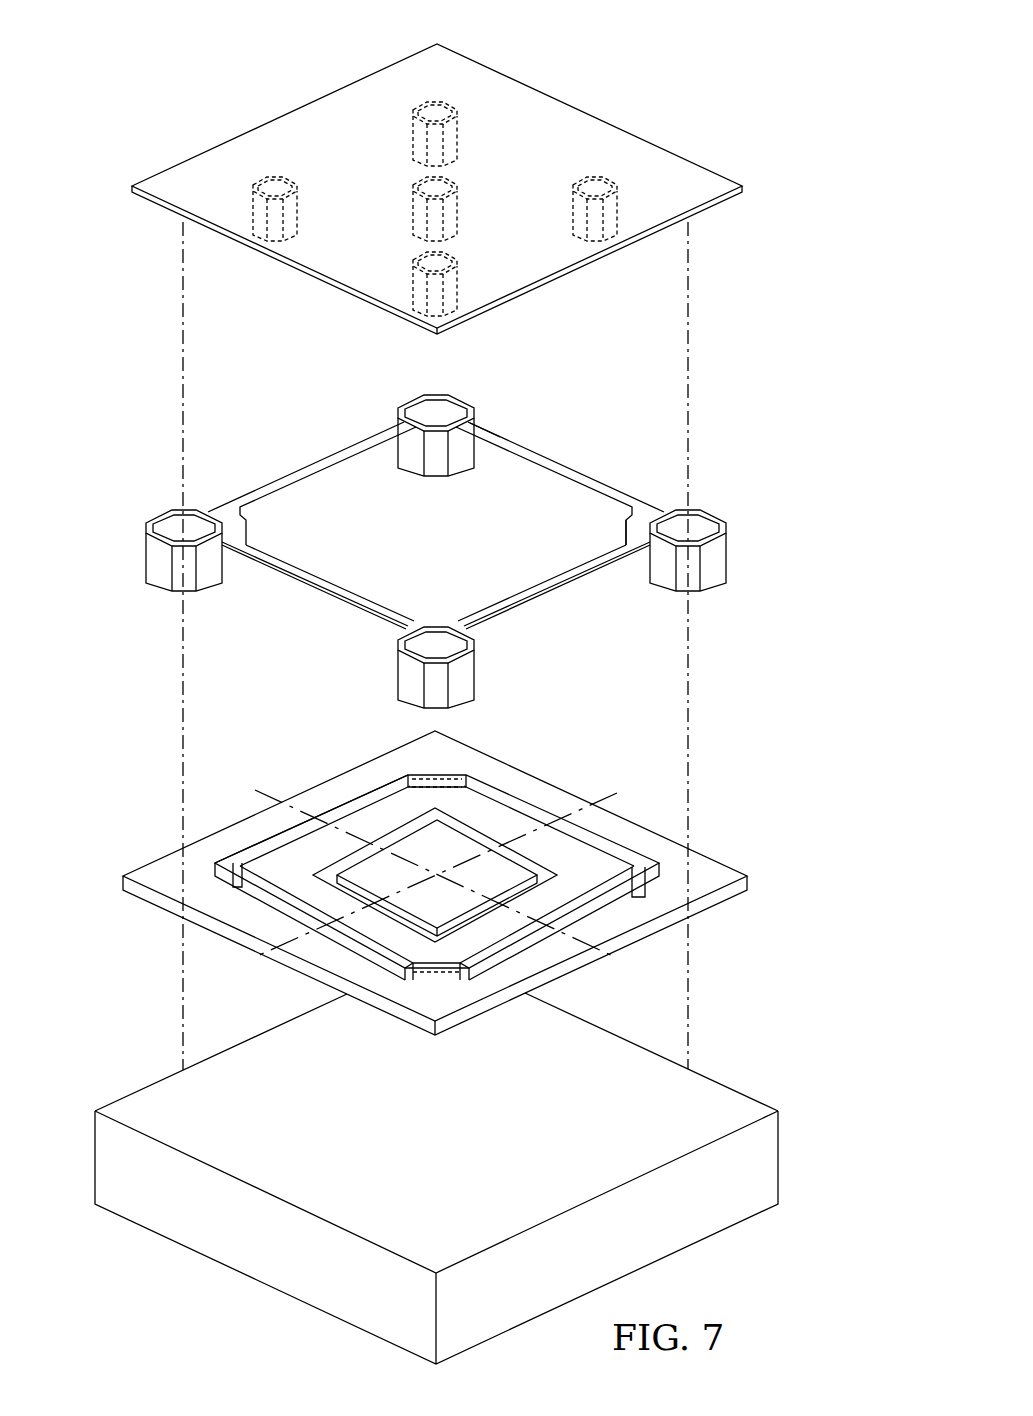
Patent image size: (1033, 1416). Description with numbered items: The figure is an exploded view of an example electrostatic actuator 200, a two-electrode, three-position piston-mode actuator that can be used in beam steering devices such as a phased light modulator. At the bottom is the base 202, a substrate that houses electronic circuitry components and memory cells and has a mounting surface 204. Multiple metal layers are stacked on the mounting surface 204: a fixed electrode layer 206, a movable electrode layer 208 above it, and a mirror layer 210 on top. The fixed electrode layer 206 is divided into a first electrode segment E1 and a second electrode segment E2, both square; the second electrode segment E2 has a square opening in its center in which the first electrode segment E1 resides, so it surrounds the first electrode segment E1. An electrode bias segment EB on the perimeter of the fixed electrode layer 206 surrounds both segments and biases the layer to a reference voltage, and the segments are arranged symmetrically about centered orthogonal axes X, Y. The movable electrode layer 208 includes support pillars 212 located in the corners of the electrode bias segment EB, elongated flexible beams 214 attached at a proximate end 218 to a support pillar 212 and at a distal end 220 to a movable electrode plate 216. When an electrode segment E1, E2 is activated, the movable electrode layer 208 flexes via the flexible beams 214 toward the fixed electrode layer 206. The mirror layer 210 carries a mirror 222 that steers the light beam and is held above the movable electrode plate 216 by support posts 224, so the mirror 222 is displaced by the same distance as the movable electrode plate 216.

The electrostatic actuator 200 is at (681, 60).
The base 202 is at (266, 1285).
The mounting surface 204 is at (633, 1056).
The fixed electrode layer 206 is at (150, 836).
The movable electrode layer 208 is at (295, 447).
The mirror layer 210 is at (284, 100).
The support pillars 212 is at (400, 416).
The elongated flexible beams 214 is at (257, 492).
The movable electrode plate 216 is at (458, 538).
The proximate end 218 is at (492, 425).
The distal end 220 is at (630, 495).
The mirror 222 is at (578, 122).
The support posts 224 is at (407, 212).
The first electrode segment E1 is at (406, 831).
The second electrode segment E2 is at (510, 797).
The X axis X is at (424, 870).
The Y axis Y is at (446, 870).
The electrode bias segment EB is at (721, 853).